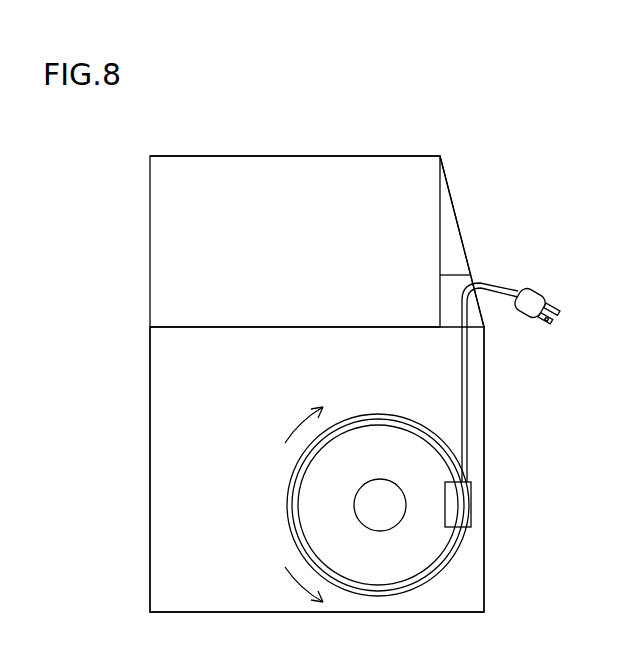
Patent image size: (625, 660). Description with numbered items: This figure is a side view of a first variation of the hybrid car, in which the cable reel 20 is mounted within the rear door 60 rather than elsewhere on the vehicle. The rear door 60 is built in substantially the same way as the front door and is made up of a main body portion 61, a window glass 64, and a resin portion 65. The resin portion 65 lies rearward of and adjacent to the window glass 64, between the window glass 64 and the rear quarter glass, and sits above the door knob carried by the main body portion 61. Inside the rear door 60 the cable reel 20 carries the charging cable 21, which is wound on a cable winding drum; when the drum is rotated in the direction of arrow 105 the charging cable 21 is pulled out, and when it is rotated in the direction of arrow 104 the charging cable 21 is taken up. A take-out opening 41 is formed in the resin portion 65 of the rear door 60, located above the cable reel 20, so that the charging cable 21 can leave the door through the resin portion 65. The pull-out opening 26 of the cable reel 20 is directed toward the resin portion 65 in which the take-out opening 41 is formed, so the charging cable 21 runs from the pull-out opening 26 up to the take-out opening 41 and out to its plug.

The rear door 60 is at (146, 186).
The window glass 64 is at (293, 183).
The resin portion 65 is at (448, 230).
The take-out opening 41 is at (450, 287).
The main body portion 61 is at (172, 502).
The cable reel 20 is at (452, 570).
The pull-out opening 26 is at (455, 503).
The charging cable 21 is at (467, 368).
The arrow 104 is at (288, 428).
The arrow 105 is at (297, 582).